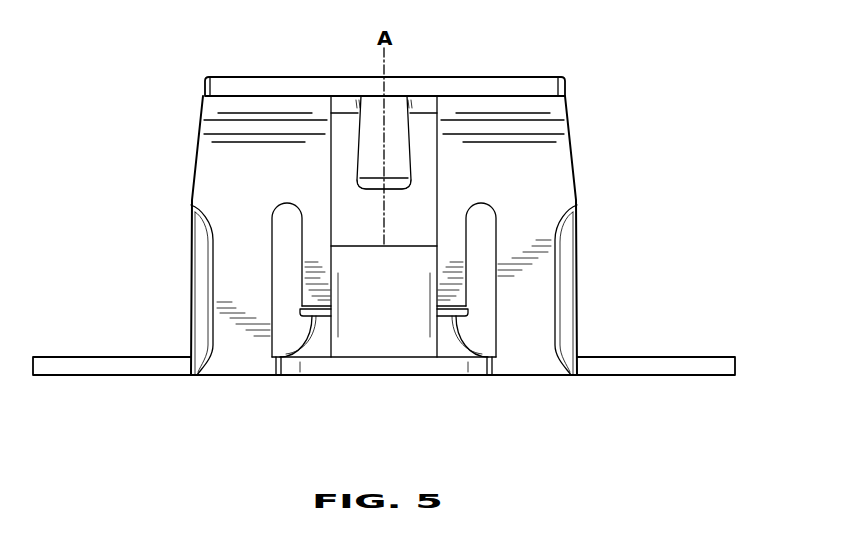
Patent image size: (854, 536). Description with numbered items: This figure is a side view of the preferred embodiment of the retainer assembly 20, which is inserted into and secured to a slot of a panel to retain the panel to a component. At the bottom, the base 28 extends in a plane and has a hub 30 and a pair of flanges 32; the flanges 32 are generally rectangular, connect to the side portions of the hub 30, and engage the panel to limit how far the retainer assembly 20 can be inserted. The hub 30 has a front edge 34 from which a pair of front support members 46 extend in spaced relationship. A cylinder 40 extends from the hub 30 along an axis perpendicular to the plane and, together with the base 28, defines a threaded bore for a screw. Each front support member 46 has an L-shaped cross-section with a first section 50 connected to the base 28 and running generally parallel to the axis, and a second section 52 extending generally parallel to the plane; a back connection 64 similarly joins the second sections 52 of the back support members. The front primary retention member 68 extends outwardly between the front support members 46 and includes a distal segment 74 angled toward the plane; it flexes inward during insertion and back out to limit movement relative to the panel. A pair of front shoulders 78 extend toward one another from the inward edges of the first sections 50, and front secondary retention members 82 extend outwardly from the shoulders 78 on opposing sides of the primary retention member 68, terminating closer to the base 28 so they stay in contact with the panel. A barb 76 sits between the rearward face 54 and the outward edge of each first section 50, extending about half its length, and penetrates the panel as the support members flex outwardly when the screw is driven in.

The retainer assembly 20 is at (637, 64).
The base 28 is at (313, 382).
The hub 30 is at (454, 378).
The flanges 32 is at (53, 365).
The front edge 34 is at (368, 380).
The cylinder 40 is at (413, 335).
The front support members 46 is at (236, 354).
The first section 50 is at (235, 300).
The second section 52 is at (213, 88).
The rearward face 54 is at (204, 190).
The back connection 64 is at (342, 77).
The front primary retention member 68 is at (362, 191).
The distal segment 74 is at (396, 187).
The barb 76 is at (190, 250).
The front shoulders 78 is at (305, 190).
The front secondary retention members 82 is at (318, 262).